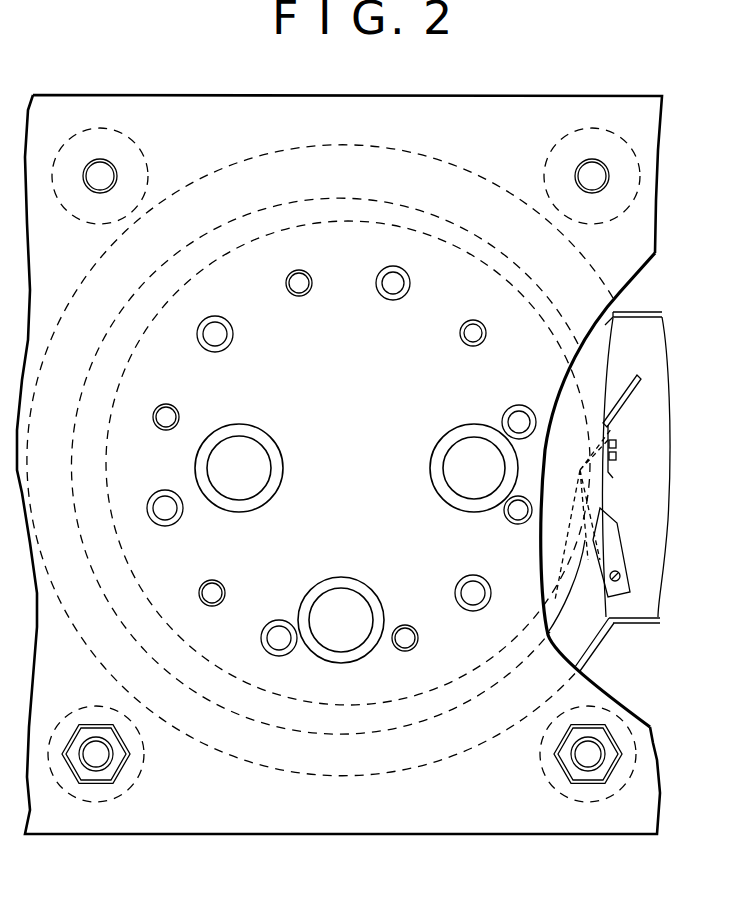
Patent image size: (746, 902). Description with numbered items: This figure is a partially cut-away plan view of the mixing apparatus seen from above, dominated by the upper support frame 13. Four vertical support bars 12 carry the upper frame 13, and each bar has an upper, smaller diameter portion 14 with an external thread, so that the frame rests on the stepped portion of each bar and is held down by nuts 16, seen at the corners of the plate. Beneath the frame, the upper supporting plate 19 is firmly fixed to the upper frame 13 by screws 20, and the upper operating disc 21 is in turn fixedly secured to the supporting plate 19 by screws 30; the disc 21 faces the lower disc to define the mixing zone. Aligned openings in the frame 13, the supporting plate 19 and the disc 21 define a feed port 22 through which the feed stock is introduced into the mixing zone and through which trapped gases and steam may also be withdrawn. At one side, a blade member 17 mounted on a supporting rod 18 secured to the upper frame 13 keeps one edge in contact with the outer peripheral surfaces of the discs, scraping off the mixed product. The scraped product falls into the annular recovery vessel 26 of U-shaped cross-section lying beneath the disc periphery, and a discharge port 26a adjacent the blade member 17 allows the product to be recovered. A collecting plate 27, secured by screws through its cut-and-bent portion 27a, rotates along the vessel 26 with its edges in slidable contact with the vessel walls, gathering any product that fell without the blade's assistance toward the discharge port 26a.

The support bar 12 is at (128, 788).
The upper support frame 13 is at (241, 815).
The upper, smaller diameter portion 14 is at (110, 763).
The nut 16 is at (87, 787).
The blade member 17 is at (612, 542).
The supporting rod 18 is at (620, 577).
The upper supporting plate 19 is at (565, 612).
The screw 20 is at (283, 643).
The upper operating disc 21 is at (540, 336).
The feed port 22 is at (243, 490).
The annular recovery vessel 26 is at (597, 648).
The discharge port 26a is at (655, 315).
The collecting plate 27 is at (618, 400).
The cut-and-bent portion 27a is at (620, 465).
The screw 30 is at (213, 600).